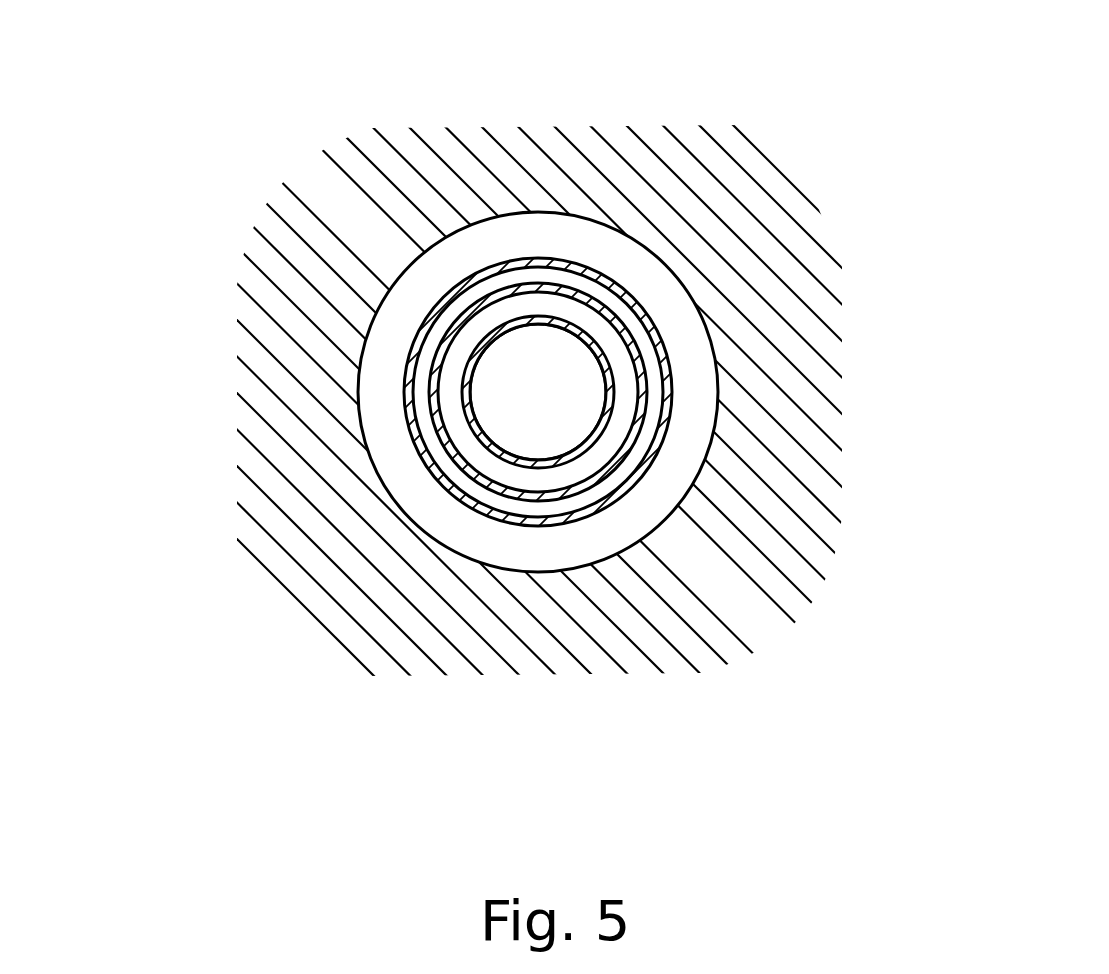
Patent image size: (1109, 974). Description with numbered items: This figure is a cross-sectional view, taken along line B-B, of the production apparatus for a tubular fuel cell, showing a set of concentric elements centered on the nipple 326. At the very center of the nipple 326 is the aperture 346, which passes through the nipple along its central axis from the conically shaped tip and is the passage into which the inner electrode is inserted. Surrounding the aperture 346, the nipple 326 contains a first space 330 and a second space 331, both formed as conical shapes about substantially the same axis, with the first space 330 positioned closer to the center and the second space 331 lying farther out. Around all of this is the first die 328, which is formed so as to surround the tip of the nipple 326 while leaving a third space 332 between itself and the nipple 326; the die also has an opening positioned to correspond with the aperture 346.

The nipple 326 is at (433, 310).
The first die 328 is at (597, 172).
The first space 330 is at (618, 357).
The second space 331 is at (668, 384).
The third space 332 is at (702, 419).
The aperture 346 is at (570, 357).